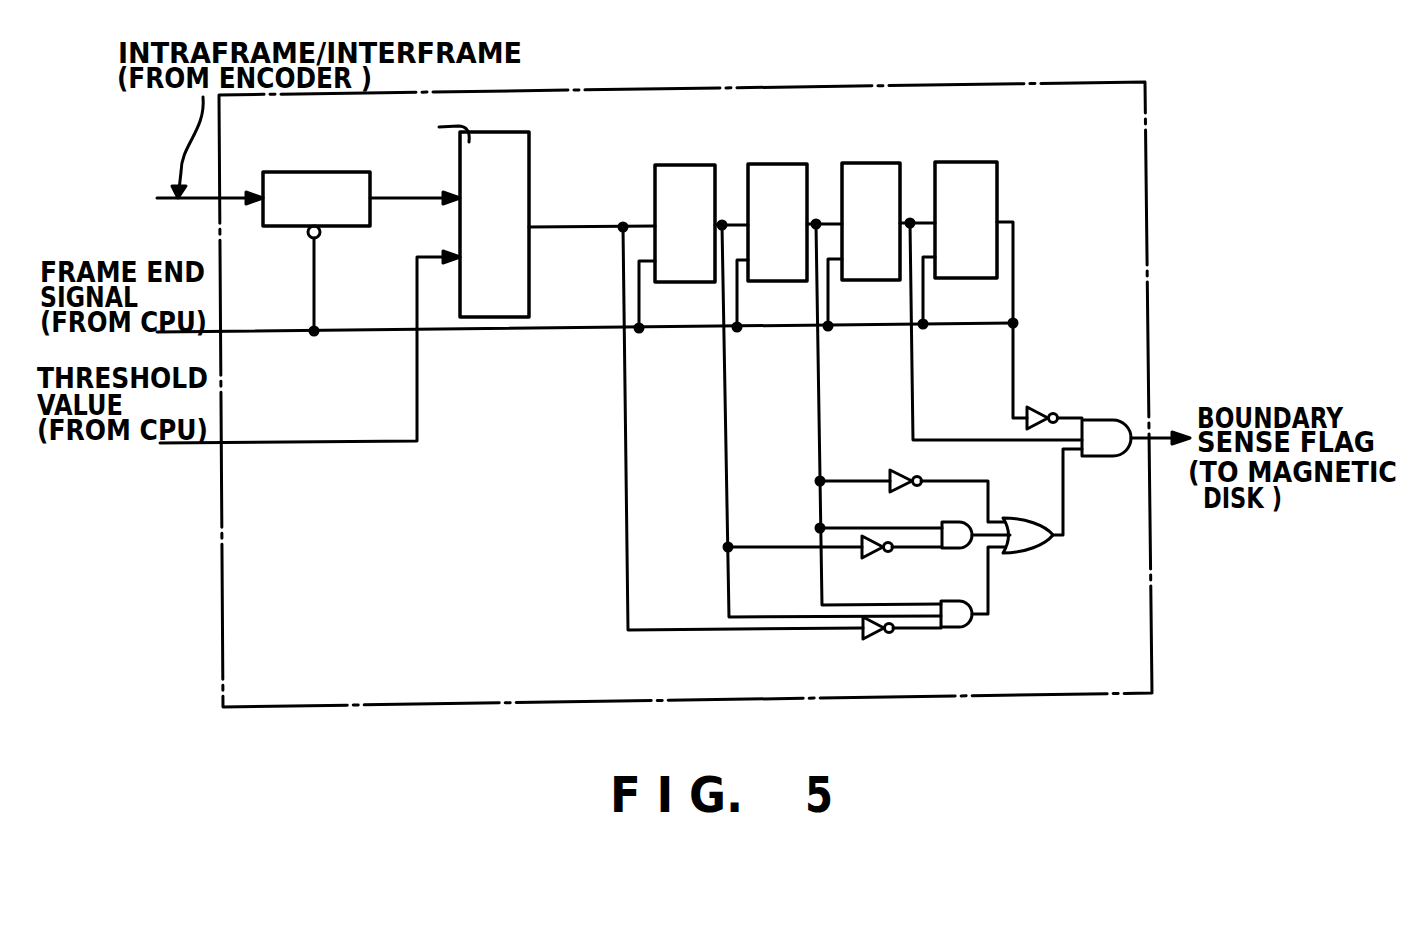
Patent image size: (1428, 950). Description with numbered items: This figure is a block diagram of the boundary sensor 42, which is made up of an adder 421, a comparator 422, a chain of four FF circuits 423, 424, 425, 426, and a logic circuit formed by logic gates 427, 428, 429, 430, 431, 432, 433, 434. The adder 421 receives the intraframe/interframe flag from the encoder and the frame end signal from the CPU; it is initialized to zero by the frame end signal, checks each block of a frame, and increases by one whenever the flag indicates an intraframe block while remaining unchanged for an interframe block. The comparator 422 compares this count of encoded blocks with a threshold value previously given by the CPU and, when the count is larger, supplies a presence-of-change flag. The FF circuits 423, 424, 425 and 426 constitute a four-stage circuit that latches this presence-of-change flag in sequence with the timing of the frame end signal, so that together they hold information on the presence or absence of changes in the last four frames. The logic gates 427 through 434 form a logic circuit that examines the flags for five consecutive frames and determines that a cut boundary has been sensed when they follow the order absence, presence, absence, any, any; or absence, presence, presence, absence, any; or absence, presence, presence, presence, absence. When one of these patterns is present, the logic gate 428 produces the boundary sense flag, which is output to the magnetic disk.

The boundary sensor 42 is at (1012, 82).
The adder 421 is at (290, 226).
The comparator 422 is at (530, 279).
The FF circuit 423 is at (677, 165).
The FF circuit 424 is at (775, 165).
The FF circuit 425 is at (868, 163).
The FF circuit 426 is at (960, 165).
The logic gate 427 is at (1041, 407).
The logic gate 428 is at (1101, 420).
The logic gate 429 is at (893, 472).
The logic gate 430 is at (874, 536).
The logic gate 431 is at (949, 548).
The logic gate 432 is at (869, 639).
The logic gate 433 is at (962, 627).
The logic gate 434 is at (1036, 553).